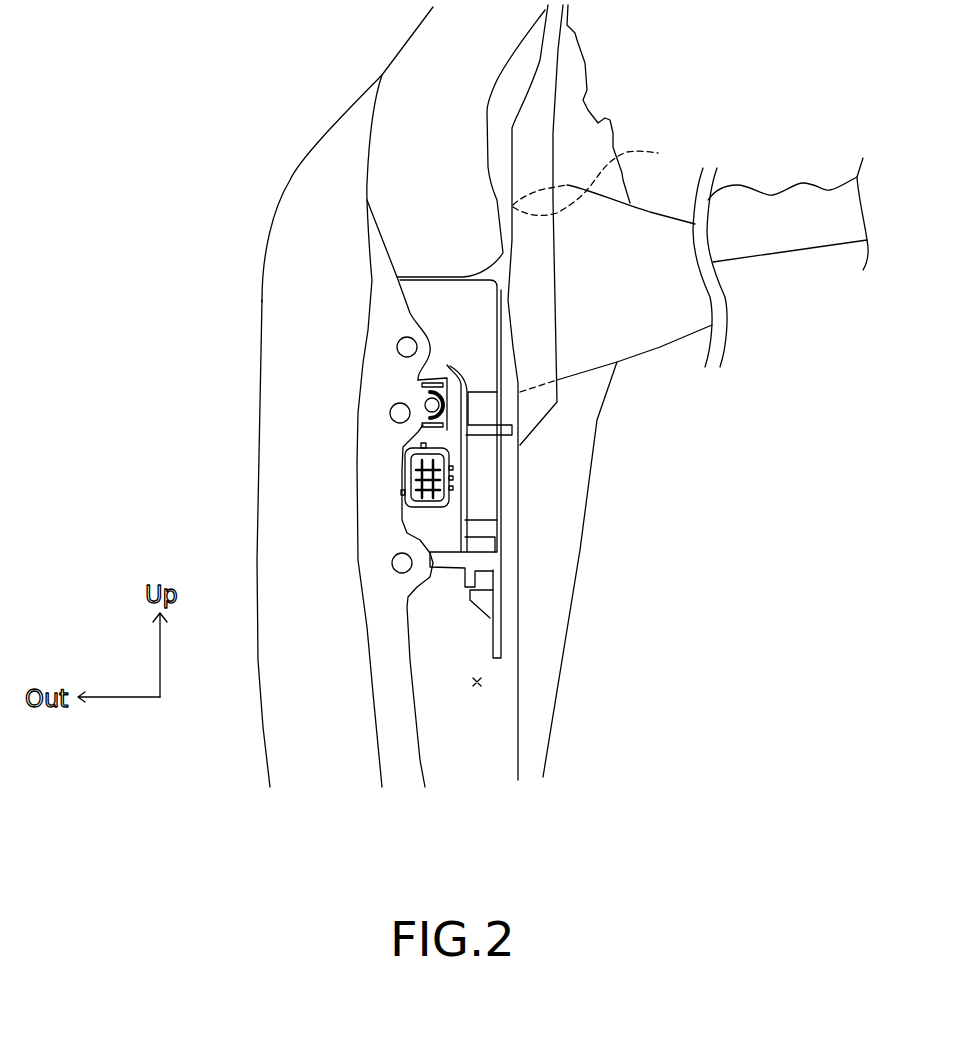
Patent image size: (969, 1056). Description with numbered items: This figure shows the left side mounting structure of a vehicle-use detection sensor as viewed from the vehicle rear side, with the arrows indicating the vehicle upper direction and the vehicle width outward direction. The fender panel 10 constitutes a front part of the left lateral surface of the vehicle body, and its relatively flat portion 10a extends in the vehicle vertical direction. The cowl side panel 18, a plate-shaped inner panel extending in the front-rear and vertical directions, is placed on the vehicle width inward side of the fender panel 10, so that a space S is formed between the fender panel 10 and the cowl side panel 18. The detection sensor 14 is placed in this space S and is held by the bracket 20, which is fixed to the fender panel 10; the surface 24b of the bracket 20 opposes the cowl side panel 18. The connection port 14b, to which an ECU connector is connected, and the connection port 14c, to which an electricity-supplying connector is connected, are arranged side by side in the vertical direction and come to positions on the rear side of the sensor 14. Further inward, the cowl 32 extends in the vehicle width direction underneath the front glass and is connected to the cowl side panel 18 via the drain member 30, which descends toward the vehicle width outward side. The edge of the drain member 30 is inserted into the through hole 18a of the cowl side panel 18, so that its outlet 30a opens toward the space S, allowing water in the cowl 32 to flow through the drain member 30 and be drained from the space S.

The fender panel 10 is at (288, 177).
The flat portion 10a is at (273, 305).
The detection sensor 14 is at (434, 438).
The connection port 14b is at (423, 402).
The connection port 14c is at (412, 487).
The cowl side panel 18 is at (538, 103).
The through hole 18a is at (613, 175).
The bracket 20 is at (457, 365).
The surface 24b is at (500, 512).
The drain member 30 is at (653, 350).
The outlet 30a is at (515, 348).
The cowl 32 is at (783, 242).
The space S is at (483, 680).